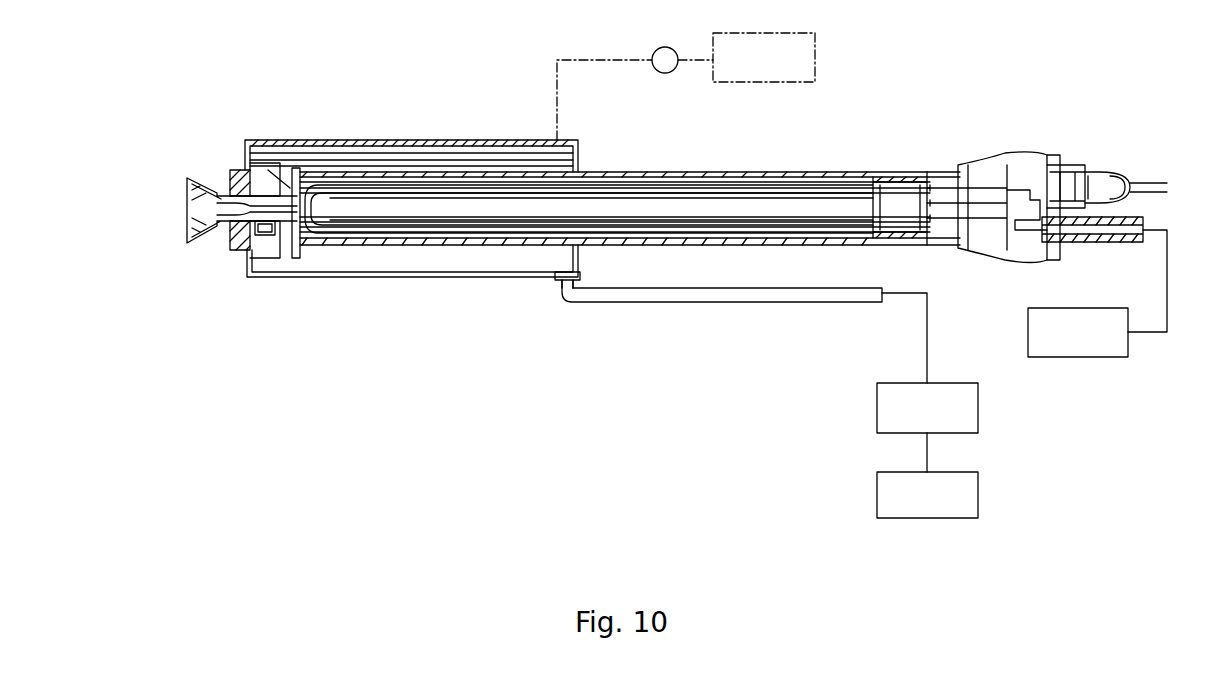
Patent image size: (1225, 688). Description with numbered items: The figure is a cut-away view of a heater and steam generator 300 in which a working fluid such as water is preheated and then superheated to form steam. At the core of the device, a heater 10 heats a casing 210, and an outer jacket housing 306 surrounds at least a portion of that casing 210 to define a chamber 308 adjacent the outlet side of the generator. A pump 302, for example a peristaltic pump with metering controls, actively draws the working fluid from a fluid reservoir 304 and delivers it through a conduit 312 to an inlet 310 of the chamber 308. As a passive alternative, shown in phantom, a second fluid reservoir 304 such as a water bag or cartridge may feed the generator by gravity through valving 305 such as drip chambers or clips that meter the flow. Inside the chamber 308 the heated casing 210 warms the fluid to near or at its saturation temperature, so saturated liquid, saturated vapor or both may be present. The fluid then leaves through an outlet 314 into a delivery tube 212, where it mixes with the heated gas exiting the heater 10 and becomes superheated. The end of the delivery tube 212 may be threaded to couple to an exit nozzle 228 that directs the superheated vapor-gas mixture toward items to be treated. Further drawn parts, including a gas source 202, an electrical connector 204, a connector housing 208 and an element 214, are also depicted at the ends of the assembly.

The heater and steam generator 300 is at (243, 100).
The heater 10 is at (597, 175).
The gas source 202 is at (1045, 360).
The electrical cable connector 204 is at (1156, 179).
The connector housing 208 is at (1036, 152).
The casing 210 is at (734, 167).
The delivery tube 212 is at (248, 168).
The seal 214 is at (278, 165).
The exit nozzle 228 is at (180, 221).
The pump 302 is at (882, 434).
The fluid reservoir 304 is at (890, 519).
The valving 305 is at (664, 46).
The outer jacket housing 306 is at (443, 133).
The chamber 308 is at (272, 276).
The inlet 310 is at (558, 283).
The conduit 312 is at (715, 304).
The outlet 314 is at (264, 244).